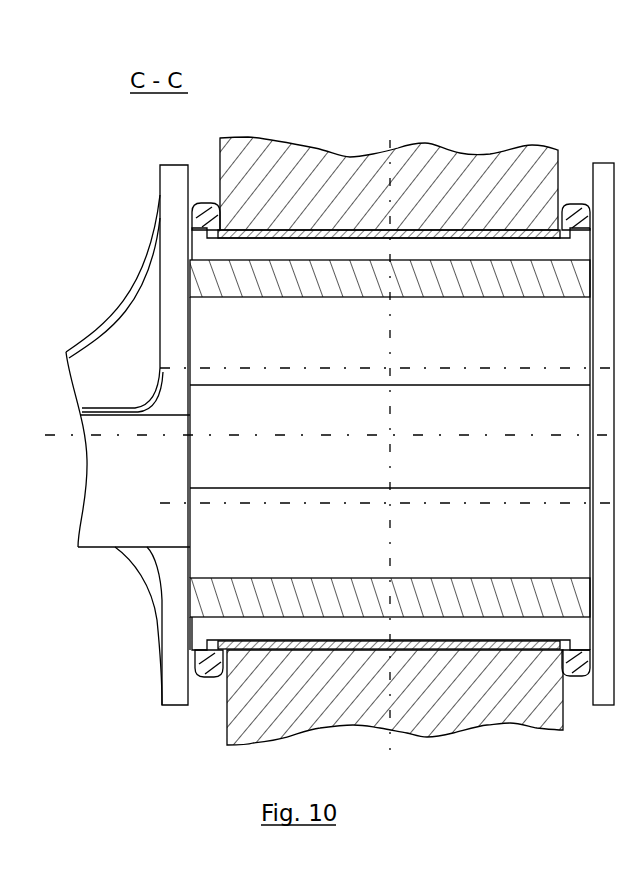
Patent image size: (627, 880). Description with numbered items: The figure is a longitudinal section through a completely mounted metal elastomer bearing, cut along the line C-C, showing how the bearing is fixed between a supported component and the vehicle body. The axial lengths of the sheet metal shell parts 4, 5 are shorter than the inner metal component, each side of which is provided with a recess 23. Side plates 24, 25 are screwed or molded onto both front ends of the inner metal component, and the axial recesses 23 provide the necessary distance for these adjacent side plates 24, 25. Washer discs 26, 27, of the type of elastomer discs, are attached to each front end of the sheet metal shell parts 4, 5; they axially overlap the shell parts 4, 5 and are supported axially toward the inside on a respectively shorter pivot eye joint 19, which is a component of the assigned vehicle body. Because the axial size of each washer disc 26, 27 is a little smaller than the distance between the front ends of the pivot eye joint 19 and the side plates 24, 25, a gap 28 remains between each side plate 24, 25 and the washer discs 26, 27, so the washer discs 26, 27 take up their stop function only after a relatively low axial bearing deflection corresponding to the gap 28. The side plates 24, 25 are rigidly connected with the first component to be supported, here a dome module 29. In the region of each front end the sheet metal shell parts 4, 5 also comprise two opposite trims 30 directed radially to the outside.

The sheet metal shell part 4 is at (297, 180).
The sheet metal shell part 5 is at (426, 650).
The pivot eye joint 19 is at (390, 438).
The recess 23 is at (200, 248).
The side plate 24 is at (175, 180).
The side plate 25 is at (604, 168).
The washer disc 26 is at (210, 683).
The washer disc 27 is at (582, 683).
The gap 28 is at (190, 642).
The dome module 29 is at (117, 475).
The trim 30 is at (206, 662).